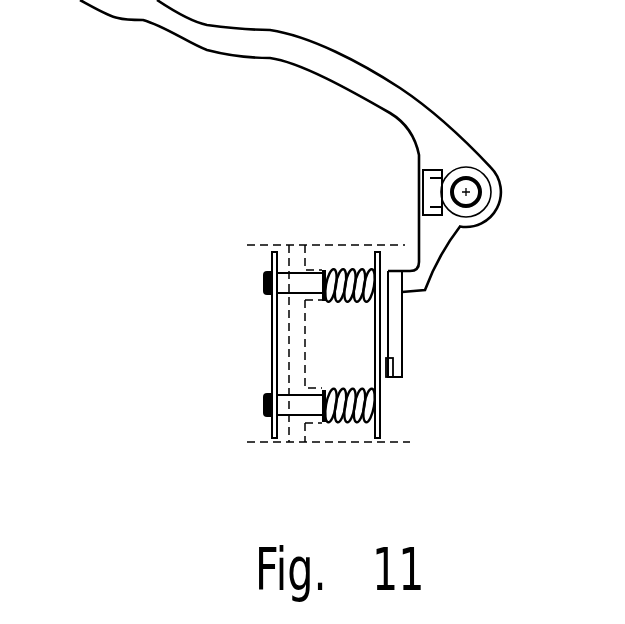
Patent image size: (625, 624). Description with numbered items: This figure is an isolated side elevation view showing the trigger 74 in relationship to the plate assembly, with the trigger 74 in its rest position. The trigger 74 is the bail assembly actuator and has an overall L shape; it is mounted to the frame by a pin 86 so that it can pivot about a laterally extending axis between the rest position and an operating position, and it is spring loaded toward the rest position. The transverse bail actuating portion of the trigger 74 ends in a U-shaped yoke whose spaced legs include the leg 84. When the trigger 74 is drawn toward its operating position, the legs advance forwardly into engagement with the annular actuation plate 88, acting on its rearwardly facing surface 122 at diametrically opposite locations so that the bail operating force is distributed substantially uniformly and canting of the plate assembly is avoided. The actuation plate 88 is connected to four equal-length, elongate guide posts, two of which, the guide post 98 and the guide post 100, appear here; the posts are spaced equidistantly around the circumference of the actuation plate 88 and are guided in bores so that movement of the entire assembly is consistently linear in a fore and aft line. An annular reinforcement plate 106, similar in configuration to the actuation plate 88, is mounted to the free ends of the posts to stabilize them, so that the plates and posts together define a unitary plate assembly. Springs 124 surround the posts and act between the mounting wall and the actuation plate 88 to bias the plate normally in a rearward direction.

The trigger 74 is at (350, 78).
The pin 86 is at (466, 192).
The leg 84 is at (395, 327).
The actuation plate 88 is at (378, 380).
The guide post 100 is at (302, 283).
The guide post 98 is at (298, 407).
The reinforcement plate 106 is at (270, 363).
The rearwardly facing surface 122 is at (382, 413).
The spring 124 is at (357, 267).